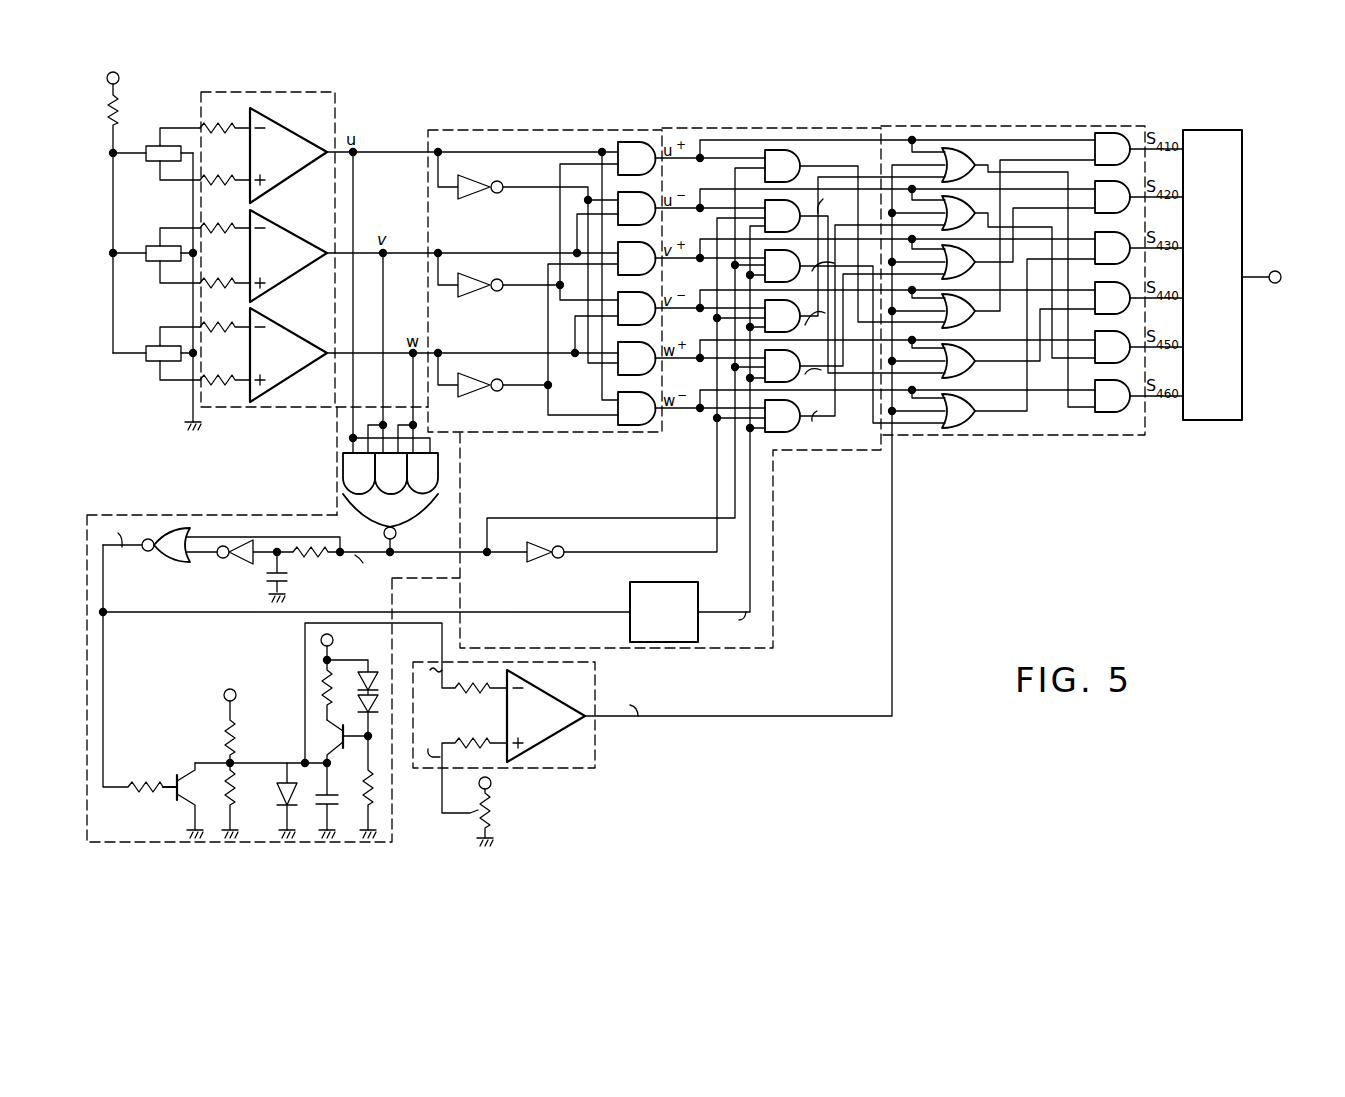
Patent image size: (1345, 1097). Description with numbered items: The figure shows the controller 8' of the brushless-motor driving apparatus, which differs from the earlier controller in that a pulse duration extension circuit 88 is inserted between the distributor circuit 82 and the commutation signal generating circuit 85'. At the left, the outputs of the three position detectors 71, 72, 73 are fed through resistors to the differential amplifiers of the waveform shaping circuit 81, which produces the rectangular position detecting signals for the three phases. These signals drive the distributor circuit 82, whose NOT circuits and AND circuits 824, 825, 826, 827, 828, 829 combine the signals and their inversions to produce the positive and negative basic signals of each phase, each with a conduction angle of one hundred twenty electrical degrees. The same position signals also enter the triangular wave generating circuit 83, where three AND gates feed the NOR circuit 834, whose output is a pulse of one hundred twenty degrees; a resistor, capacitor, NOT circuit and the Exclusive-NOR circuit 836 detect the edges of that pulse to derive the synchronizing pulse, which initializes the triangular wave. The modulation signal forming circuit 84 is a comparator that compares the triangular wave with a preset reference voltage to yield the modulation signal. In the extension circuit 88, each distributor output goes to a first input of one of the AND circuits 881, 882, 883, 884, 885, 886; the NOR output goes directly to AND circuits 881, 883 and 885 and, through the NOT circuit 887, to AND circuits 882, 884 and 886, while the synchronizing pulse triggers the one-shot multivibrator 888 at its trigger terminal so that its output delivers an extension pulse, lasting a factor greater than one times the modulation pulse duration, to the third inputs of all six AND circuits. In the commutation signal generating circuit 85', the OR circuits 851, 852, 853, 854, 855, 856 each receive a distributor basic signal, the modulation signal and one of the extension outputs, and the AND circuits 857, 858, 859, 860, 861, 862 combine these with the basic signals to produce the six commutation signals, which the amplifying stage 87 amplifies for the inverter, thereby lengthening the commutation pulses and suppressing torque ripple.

The controller 8' is at (359, 291).
The detector 71 is at (157, 146).
The detector 72 is at (157, 246).
The detector 73 is at (157, 346).
The waveform shaping circuit 81 is at (305, 92).
The distributor circuit 82 is at (512, 130).
The triangular wave generating circuit 83 is at (237, 515).
The modulation signal forming circuit 84 is at (565, 768).
The commutation signal generating circuit 85' is at (652, 462).
The amplifying stage 87 is at (1215, 130).
The pulse duration extension circuit 88 is at (765, 128).
The AND circuit 824 is at (637, 158).
The AND circuit 825 is at (637, 208).
The AND circuit 826 is at (637, 258).
The AND circuit 827 is at (637, 308).
The AND circuit 828 is at (637, 358).
The AND circuit 829 is at (637, 408).
The NOR circuit 834 is at (390, 502).
The Exclusive-NOR circuit 836 is at (165, 566).
The OR circuit 851 is at (958, 165).
The OR circuit 852 is at (958, 213).
The OR circuit 853 is at (958, 262).
The OR circuit 854 is at (958, 311).
The OR circuit 855 is at (958, 361).
The OR circuit 856 is at (958, 411).
The AND circuit 857 is at (189, 771).
The AND circuit 858 is at (1112, 197).
The AND circuit 859 is at (1112, 248).
The AND circuit 860 is at (1112, 298).
The AND circuit 861 is at (1112, 347).
The AND circuit 862 is at (1112, 396).
The AND circuit 881 is at (782, 166).
The AND circuit 882 is at (782, 216).
The AND circuit 883 is at (782, 266).
The AND circuit 884 is at (782, 316).
The AND circuit 885 is at (782, 366).
The AND circuit 886 is at (782, 416).
The NOT circuit 887 is at (545, 541).
The one-shot multivibrator 888 is at (674, 582).